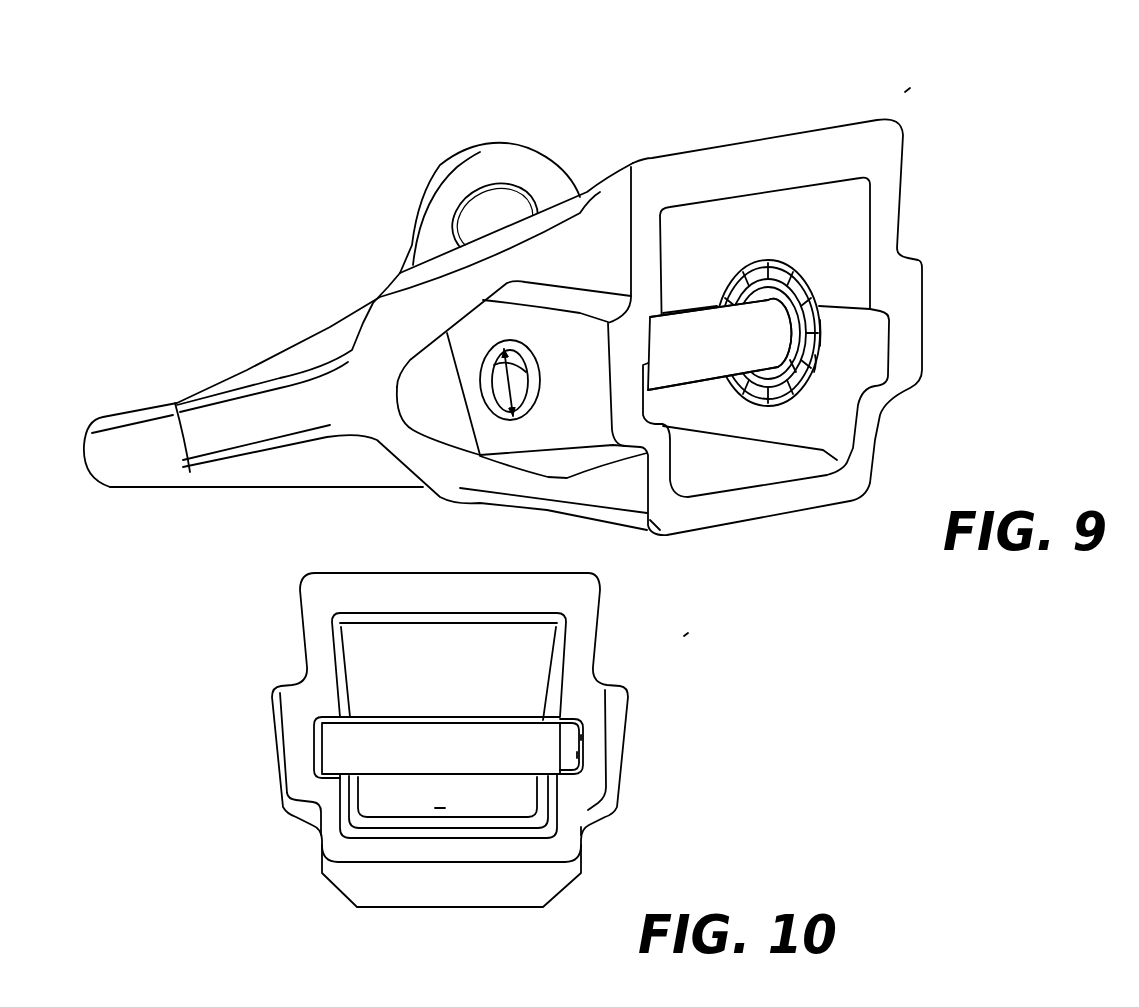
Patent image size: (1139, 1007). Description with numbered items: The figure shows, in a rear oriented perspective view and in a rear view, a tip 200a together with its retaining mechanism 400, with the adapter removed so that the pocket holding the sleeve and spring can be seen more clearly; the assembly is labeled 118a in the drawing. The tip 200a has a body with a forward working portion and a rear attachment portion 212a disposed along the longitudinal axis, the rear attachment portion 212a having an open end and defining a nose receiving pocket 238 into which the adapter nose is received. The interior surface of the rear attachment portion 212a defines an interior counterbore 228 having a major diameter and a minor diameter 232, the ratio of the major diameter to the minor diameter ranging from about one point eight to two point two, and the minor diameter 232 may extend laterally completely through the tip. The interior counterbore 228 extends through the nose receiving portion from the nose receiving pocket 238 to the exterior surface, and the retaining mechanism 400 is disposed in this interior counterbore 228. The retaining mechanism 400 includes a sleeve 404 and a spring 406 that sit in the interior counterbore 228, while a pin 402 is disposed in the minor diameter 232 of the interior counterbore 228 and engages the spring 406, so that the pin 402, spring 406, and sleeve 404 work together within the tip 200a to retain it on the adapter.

In FIG. 9, the latch assembly 118a is at (907, 89).
In FIG. 10, the latch assembly 118a is at (688, 634).
In FIG. 9, the tip 200a is at (906, 215).
In FIG. 10, the tip 200a is at (296, 615).
In FIG. 9, the rear attachment portion 212a is at (636, 526).
In FIG. 10, the rear attachment portion 212a is at (565, 832).
In FIG. 9, the interior counterbore 228 is at (789, 273).
In FIG. 10, the interior counterbore 228 is at (575, 716).
In FIG. 9, the minor diameter 232 is at (523, 357).
In FIG. 9, the nose receiving pocket 238 is at (666, 282).
In FIG. 10, the nose receiving pocket 238 is at (441, 811).
In FIG. 9, the retaining mechanism 400 is at (826, 338).
In FIG. 10, the retaining mechanism 400 is at (569, 757).
In FIG. 9, the pin 402 is at (710, 340).
In FIG. 10, the pin 402 is at (343, 750).
In FIG. 9, the sleeve 404 is at (820, 367).
In FIG. 10, the sleeve 404 is at (570, 737).
In FIG. 9, the spring 406 is at (793, 367).